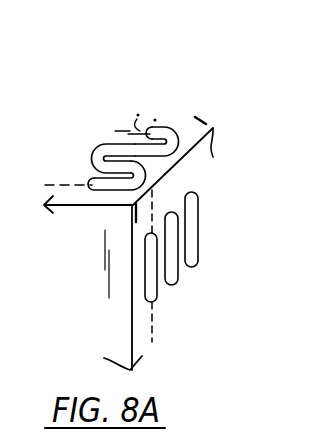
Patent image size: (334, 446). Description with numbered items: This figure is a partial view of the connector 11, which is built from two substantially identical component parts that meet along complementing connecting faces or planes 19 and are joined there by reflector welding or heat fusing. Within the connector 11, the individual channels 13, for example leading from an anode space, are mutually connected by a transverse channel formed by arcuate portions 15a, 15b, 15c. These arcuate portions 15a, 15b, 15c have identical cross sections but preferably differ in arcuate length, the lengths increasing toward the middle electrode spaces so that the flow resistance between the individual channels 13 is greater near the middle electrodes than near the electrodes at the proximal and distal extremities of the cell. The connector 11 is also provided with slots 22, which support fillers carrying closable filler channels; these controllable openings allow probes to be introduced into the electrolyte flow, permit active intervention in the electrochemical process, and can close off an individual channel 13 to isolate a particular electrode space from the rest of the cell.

The connector 11 is at (88, 277).
The individual channel 13 is at (151, 125).
The arcuate portion 15a is at (172, 127).
The arcuate portion 15b is at (98, 147).
The arcuate portion 15c is at (97, 189).
The connecting face 19 is at (203, 122).
The slot 22 is at (152, 298).